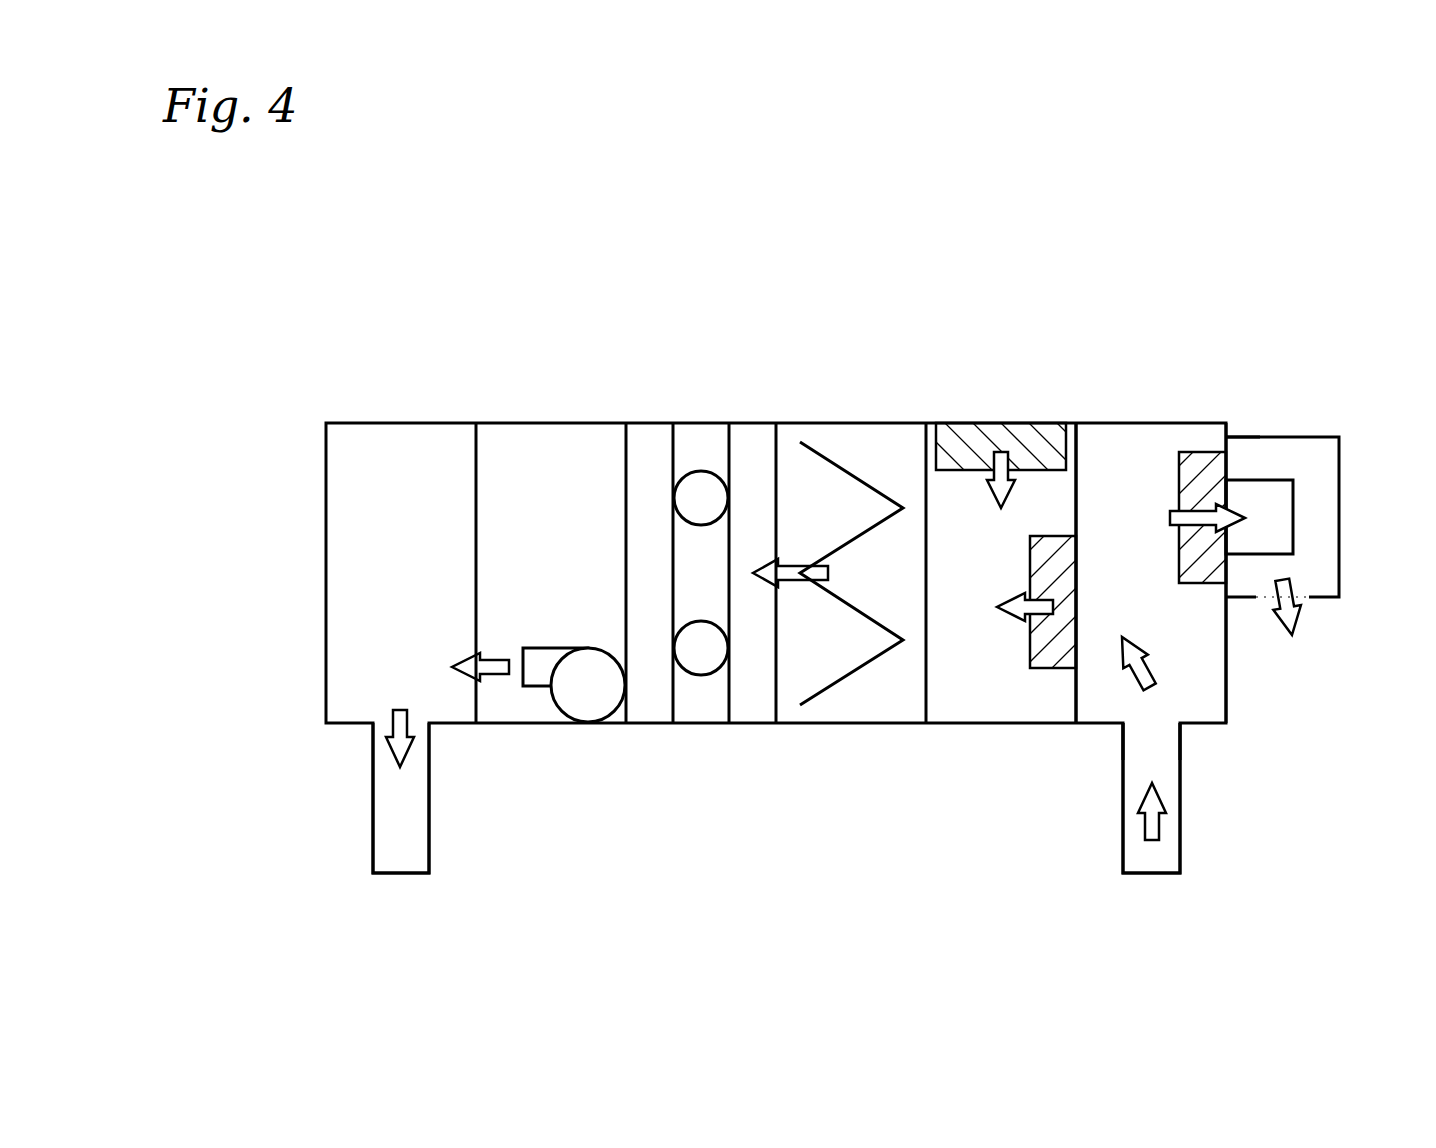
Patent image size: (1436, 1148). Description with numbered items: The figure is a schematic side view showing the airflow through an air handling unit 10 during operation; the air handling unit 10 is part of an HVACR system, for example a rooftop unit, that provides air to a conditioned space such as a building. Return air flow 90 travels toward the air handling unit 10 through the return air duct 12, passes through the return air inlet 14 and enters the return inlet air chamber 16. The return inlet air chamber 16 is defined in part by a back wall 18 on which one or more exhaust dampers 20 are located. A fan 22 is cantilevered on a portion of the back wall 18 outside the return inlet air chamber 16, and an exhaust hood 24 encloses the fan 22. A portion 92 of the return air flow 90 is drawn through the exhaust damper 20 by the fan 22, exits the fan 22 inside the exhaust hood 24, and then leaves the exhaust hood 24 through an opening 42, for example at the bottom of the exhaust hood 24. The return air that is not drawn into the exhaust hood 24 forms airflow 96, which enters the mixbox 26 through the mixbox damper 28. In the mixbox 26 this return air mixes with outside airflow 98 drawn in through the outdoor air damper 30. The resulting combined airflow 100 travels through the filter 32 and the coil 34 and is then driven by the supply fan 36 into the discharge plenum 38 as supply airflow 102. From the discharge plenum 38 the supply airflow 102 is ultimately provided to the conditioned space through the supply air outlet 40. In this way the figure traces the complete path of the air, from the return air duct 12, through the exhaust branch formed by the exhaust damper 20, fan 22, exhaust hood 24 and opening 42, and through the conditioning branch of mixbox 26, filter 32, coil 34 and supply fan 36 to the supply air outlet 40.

The air handling unit 10 is at (662, 272).
The return air duct 12 is at (1143, 858).
The return air inlet 14 is at (1157, 725).
The return inlet air chamber 16 is at (1172, 632).
The back wall 18 is at (1228, 444).
The exhaust damper 20 is at (1193, 450).
The fan 22 is at (1293, 498).
The exhaust hood 24 is at (1309, 437).
The mixbox 26 is at (975, 693).
The mixbox damper 28 is at (1055, 670).
The outdoor air damper 30 is at (970, 435).
The filter 32 is at (822, 697).
The coil 34 is at (686, 678).
The supply fan 36 is at (558, 710).
The discharge plenum 38 is at (405, 447).
The supply air outlet 40 is at (395, 822).
The opening 42 is at (1303, 593).
The return air flow 90 is at (1150, 685).
The portion of return air flow 92 is at (1240, 527).
The airflow 96 is at (1017, 622).
The outside airflow 98 is at (1002, 448).
The combined airflow 100 is at (767, 565).
The supply airflow 102 is at (460, 662).